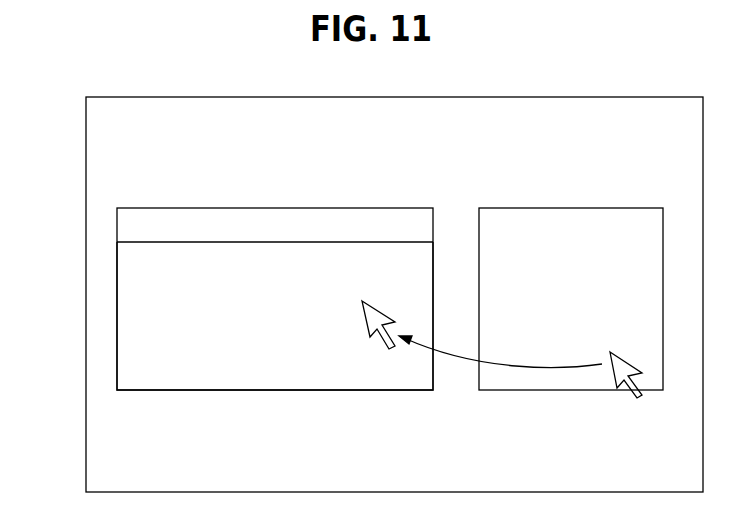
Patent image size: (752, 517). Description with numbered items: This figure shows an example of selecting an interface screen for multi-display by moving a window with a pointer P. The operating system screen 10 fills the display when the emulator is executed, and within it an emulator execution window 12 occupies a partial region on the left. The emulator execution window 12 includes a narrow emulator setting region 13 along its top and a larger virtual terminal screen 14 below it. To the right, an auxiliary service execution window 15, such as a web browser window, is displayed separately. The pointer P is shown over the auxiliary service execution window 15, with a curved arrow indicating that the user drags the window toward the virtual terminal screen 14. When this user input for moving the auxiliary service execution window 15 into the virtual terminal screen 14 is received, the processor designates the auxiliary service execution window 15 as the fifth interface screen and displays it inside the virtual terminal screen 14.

The operating system screen 10 is at (86, 142).
The emulator execution window 12 is at (282, 208).
The emulator setting region 13 is at (117, 226).
The virtual terminal screen 14 is at (117, 317).
The auxiliary service execution window 15 is at (575, 208).
The pointer P is at (618, 373).